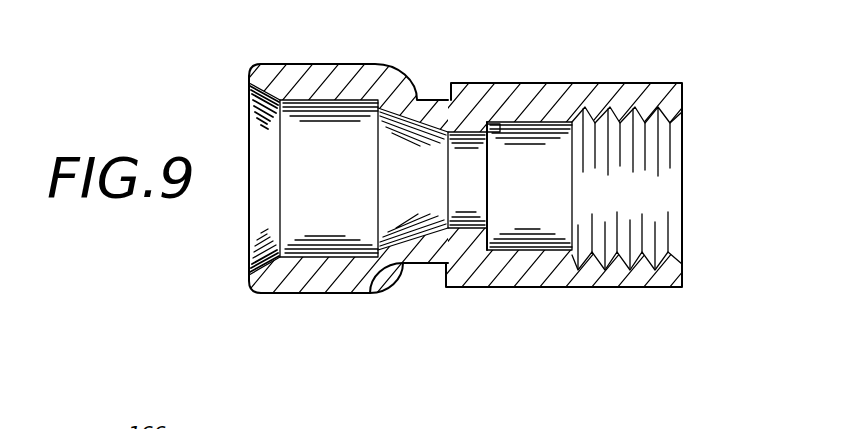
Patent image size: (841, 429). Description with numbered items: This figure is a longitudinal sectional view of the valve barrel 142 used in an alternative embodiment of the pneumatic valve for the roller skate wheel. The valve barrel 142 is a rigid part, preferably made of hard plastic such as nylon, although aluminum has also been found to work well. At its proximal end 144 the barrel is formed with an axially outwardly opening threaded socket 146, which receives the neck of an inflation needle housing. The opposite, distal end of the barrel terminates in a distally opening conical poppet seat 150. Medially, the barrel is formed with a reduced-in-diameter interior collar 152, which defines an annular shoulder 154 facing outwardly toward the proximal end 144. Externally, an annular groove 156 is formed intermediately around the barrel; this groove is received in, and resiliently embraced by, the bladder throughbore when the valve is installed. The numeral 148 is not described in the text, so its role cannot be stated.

The valve barrel 142 is at (643, 75).
The proximal end 144 is at (656, 288).
The threaded socket 146 is at (559, 243).
The nut 148 is at (306, 64).
The conical poppet seat 150 is at (266, 266).
The interior collar 152 is at (471, 226).
The annular shoulder 154 is at (492, 130).
The annular groove 156 is at (400, 272).